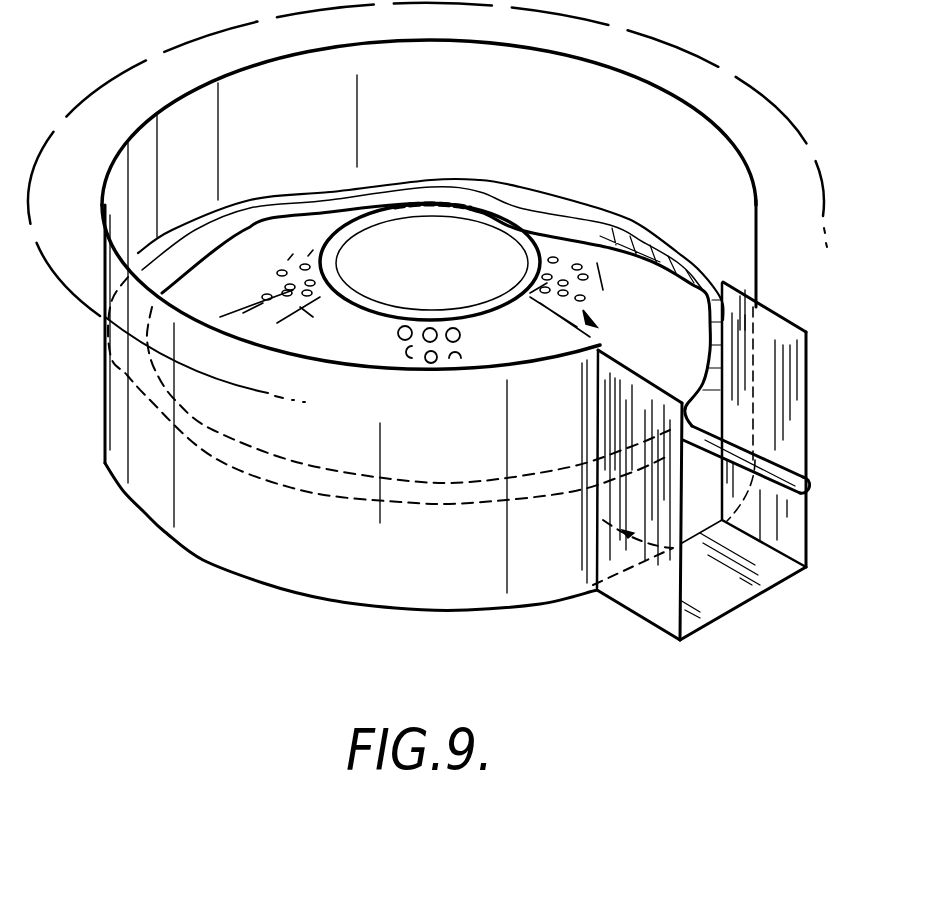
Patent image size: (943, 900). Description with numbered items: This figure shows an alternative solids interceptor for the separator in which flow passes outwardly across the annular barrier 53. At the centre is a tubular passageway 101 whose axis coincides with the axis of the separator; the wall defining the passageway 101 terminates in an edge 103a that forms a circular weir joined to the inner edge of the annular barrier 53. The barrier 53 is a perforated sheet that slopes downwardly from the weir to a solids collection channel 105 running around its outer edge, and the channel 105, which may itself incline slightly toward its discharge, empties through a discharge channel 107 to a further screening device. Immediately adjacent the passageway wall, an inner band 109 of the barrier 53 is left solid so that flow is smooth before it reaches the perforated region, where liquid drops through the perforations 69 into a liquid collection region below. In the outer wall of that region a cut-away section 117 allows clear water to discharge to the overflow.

The annular barrier 53 is at (255, 253).
The tubular passageway 101 is at (407, 247).
The edge 103a is at (512, 243).
The inner band 109 is at (500, 262).
The solids collection channel 105 is at (167, 412).
The perforations 69 is at (405, 333).
The cut-away section 117 is at (697, 510).
The discharge channel 107 is at (797, 490).